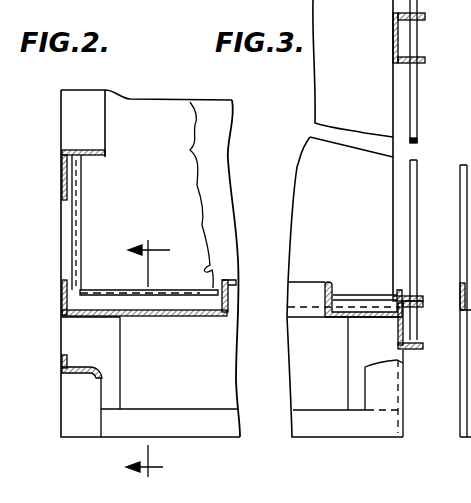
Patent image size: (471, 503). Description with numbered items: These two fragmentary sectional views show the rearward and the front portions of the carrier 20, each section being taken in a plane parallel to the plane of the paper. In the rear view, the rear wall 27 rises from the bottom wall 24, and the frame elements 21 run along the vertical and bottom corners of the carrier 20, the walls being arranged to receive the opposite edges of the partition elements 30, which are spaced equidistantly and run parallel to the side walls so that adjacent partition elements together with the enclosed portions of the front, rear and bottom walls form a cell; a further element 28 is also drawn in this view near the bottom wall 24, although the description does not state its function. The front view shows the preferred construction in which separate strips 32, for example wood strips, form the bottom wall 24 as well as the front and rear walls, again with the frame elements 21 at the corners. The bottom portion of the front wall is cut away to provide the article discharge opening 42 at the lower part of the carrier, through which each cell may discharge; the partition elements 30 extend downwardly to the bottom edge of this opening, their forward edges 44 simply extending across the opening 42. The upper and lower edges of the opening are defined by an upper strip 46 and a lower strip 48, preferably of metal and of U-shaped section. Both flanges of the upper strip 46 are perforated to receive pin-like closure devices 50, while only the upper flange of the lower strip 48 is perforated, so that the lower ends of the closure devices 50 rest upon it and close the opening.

In FIG. 2, the carrier 20 is at (60, 230).
In FIG. 2, the frame elements 21 is at (63, 293).
In FIG. 3, the frame elements 21 is at (298, 285).
In FIG. 2, the bottom wall 24 is at (100, 290).
In FIG. 2, the rear wall 27 is at (66, 145).
In FIG. 2, the inner plate 28 is at (196, 288).
In FIG. 2, the partition elements 30 is at (210, 115).
In FIG. 3, the partition elements 30 is at (318, 88).
In FIG. 3, the strips 32 is at (341, 300).
In FIG. 3, the article discharge opening 42 is at (421, 66).
In FIG. 3, the forward edges 44 is at (382, 176).
In FIG. 3, the upper strip 46 is at (423, 18).
In FIG. 3, the lower strip 48 is at (408, 349).
In FIG. 3, the closure devices 50 is at (415, 134).